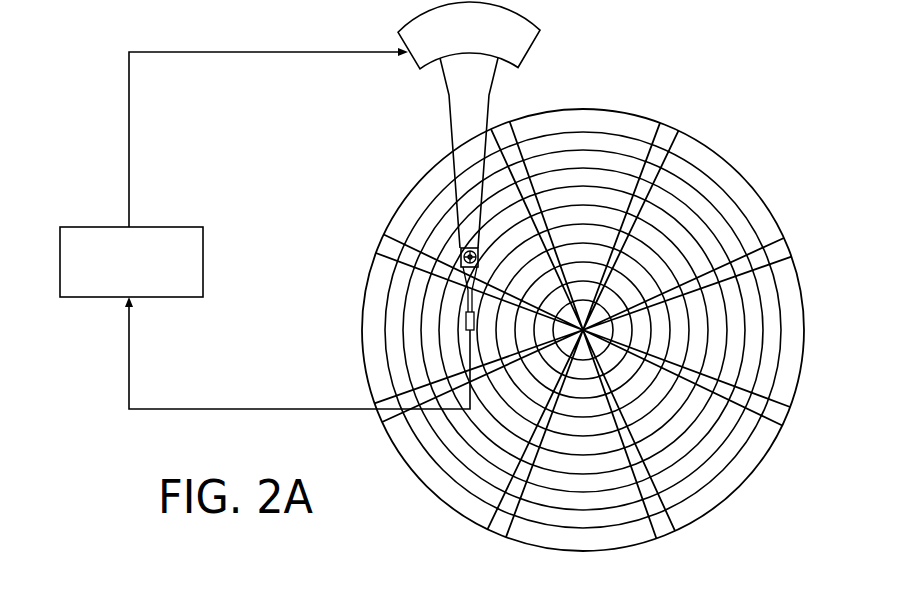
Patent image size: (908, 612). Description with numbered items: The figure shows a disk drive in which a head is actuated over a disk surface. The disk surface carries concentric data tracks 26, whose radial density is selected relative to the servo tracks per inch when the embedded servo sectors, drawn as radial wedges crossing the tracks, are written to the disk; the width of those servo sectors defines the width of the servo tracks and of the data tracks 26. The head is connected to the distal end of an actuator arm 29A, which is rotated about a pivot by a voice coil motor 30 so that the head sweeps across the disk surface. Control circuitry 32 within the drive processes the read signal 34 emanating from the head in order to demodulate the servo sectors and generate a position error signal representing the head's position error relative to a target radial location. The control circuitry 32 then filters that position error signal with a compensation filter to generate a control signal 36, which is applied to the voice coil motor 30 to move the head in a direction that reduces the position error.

The data tracks 26 is at (584, 136).
The actuator arm 29A is at (452, 141).
The voice coil motor 30 is at (416, 64).
The control circuitry 32 is at (168, 226).
The read signal 34 is at (252, 408).
The control signal 36 is at (128, 126).